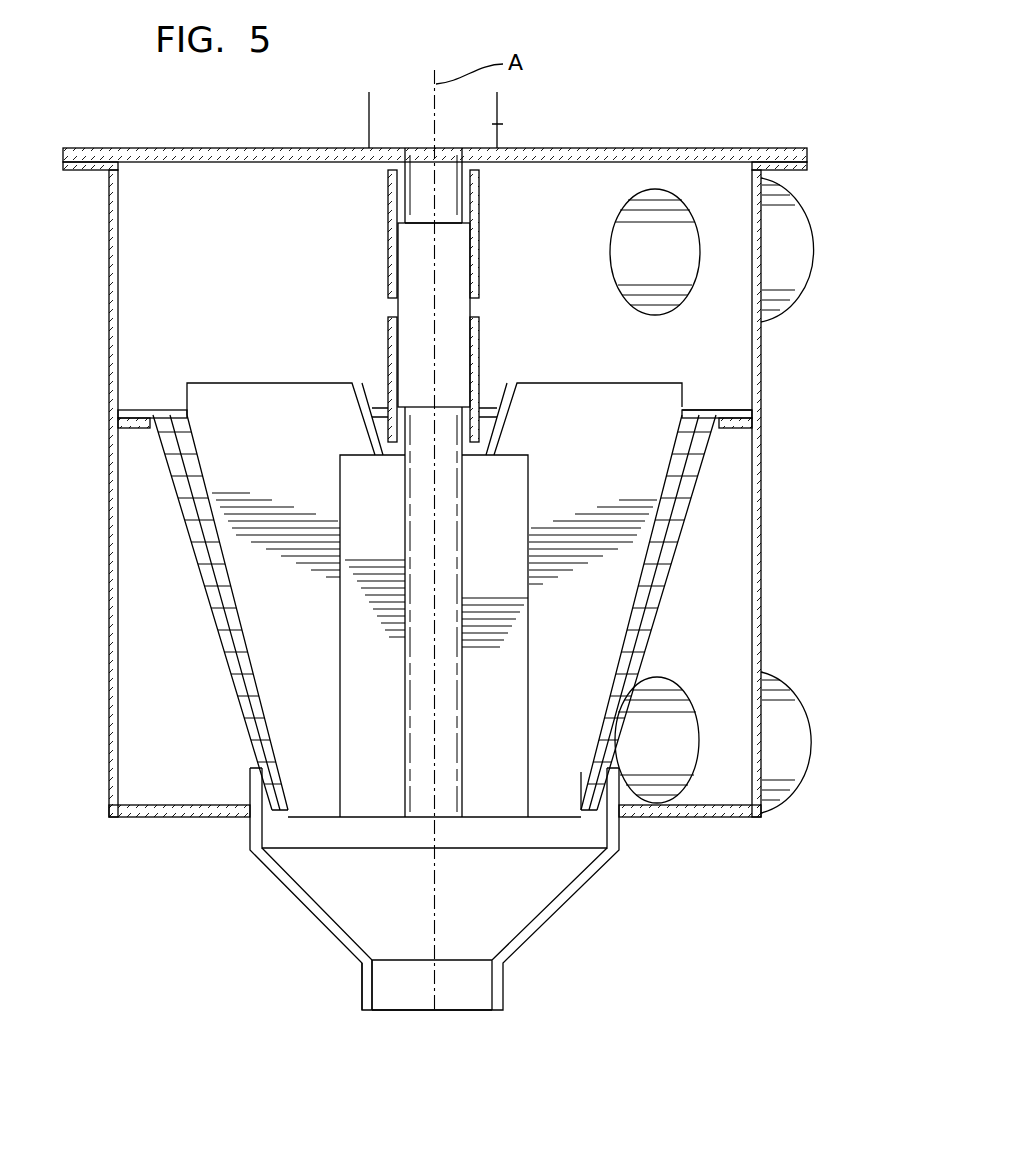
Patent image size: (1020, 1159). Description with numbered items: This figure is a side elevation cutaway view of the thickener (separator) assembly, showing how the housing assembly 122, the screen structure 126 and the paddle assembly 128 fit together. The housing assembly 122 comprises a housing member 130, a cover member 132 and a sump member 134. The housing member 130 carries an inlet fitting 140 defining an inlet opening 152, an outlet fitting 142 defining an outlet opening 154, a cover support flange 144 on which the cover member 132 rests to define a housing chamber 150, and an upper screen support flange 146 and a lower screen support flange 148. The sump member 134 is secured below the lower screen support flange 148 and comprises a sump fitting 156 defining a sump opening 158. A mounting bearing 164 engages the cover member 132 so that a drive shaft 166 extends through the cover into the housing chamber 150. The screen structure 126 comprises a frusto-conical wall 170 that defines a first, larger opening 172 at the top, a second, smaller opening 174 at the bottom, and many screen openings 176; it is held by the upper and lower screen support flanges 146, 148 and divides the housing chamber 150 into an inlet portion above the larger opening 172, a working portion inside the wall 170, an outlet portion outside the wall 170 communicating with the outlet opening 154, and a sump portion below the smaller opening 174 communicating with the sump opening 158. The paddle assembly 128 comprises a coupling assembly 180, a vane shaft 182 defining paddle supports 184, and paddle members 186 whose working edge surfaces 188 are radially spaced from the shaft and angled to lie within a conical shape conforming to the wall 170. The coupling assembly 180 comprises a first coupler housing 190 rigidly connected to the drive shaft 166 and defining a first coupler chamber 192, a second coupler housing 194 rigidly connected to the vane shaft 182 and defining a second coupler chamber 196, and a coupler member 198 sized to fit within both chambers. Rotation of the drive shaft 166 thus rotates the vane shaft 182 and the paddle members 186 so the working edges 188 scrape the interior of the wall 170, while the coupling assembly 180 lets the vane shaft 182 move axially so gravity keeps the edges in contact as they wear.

The housing assembly 122 is at (394, 493).
The screen structure 126 is at (439, 612).
The paddle assembly 128 is at (432, 454).
The housing member 130 is at (114, 297).
The cover member 132 is at (212, 148).
The sump member 134 is at (384, 915).
The inlet fitting 140 is at (786, 285).
The outlet fitting 142 is at (786, 775).
The cover support flange 144 is at (95, 170).
The upper screen support flange 146 is at (147, 426).
The lower screen support flange 148 is at (246, 785).
The housing chamber 150 is at (142, 326).
The inlet opening 152 is at (655, 215).
The outlet opening 154 is at (662, 768).
The sump fitting 156 is at (368, 992).
The sump opening 158 is at (398, 1000).
The mounting bearing 164 is at (497, 125).
The drive shaft 166 is at (447, 188).
The wall 170 is at (439, 616).
The first, larger opening 172 is at (700, 410).
The second, smaller opening 174 is at (581, 772).
The screen openings 176 is at (690, 532).
The coupling assembly 180 is at (442, 306).
The vane shaft 182 is at (440, 636).
The paddle supports 184 is at (352, 748).
The paddle members 186 is at (230, 395).
The working edge surface 188 is at (214, 531).
The first coupler housing 190 is at (478, 265).
The first coupler chamber 192 is at (467, 210).
The second coupler housing 194 is at (478, 358).
The second coupler chamber 196 is at (468, 428).
The coupler member 198 is at (458, 302).